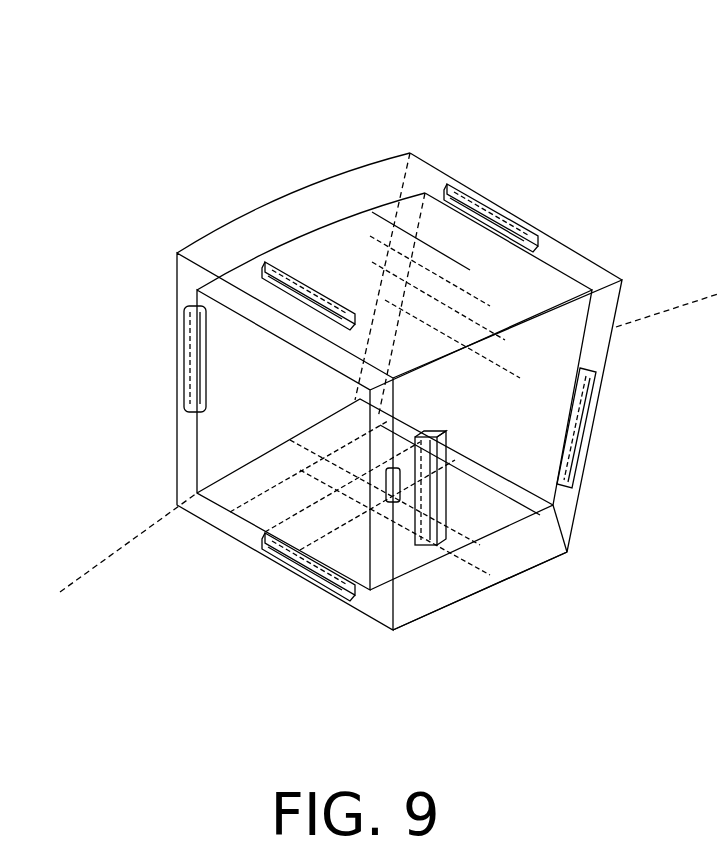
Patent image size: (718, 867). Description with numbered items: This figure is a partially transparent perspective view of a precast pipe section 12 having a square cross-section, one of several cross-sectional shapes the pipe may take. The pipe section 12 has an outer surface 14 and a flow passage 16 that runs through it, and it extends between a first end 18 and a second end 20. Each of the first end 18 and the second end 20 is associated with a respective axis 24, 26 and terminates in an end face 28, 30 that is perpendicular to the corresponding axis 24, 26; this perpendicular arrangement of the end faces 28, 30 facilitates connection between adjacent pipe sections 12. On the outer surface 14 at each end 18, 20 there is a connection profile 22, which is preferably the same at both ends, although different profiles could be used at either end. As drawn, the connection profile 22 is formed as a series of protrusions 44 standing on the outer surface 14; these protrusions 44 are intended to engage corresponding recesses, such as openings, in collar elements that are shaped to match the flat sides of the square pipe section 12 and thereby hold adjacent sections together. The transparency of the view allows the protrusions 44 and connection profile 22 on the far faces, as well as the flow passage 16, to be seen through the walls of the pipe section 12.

The pipe section 12 is at (333, 160).
The outer surface 14 is at (408, 153).
The flow passage 16 is at (230, 452).
The first end 18 is at (183, 268).
The second end 20 is at (567, 252).
The connection profile 22 is at (263, 255).
The axis 24 is at (150, 572).
The axis 26 is at (652, 312).
The end face 28 is at (280, 560).
The end face 30 is at (572, 548).
The protrusion 44 is at (290, 270).